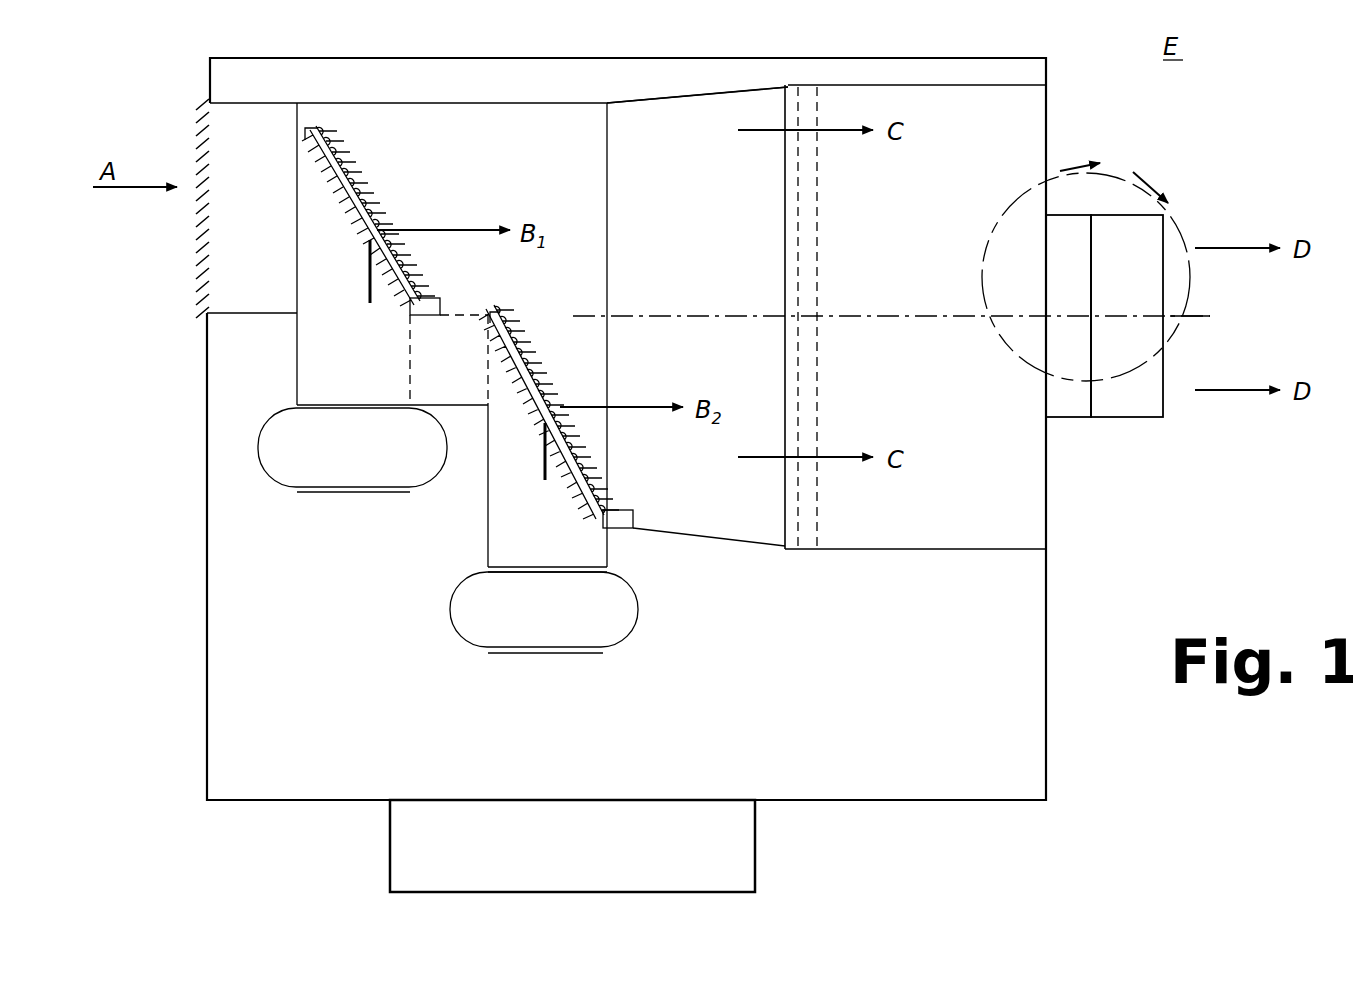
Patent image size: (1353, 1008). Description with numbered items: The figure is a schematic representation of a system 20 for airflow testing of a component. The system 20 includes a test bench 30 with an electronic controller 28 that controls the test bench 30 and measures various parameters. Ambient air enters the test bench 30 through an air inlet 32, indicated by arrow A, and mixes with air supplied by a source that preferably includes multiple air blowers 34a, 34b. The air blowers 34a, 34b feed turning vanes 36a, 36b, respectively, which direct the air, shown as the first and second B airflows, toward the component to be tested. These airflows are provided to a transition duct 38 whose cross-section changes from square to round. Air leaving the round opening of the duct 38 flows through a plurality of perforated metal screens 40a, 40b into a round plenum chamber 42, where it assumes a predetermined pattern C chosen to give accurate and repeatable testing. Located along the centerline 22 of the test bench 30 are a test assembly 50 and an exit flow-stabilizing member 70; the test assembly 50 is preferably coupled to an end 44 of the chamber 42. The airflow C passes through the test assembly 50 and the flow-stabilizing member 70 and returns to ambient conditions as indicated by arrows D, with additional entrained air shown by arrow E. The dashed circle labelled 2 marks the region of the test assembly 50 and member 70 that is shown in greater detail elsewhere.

The system 20 is at (1100, 840).
The centerline 22 is at (1202, 318).
The electronic controller 28 is at (755, 862).
The test bench 30 is at (503, 58).
The air inlet 32 is at (198, 307).
The air blower 34a is at (270, 478).
The air blower 34b is at (450, 633).
The turning vane 36a is at (347, 157).
The turning vane 36b is at (528, 340).
The transition duct 38 is at (693, 98).
The perforated metal screen 40a is at (798, 493).
The perforated metal screen 40b is at (817, 365).
The round plenum chamber 42 is at (980, 129).
The end of chamber 44 is at (1046, 158).
The detail circle 2 is at (1086, 269).
The test assembly 50 is at (1065, 418).
The exit flow-stabilizing member 70 is at (1140, 418).